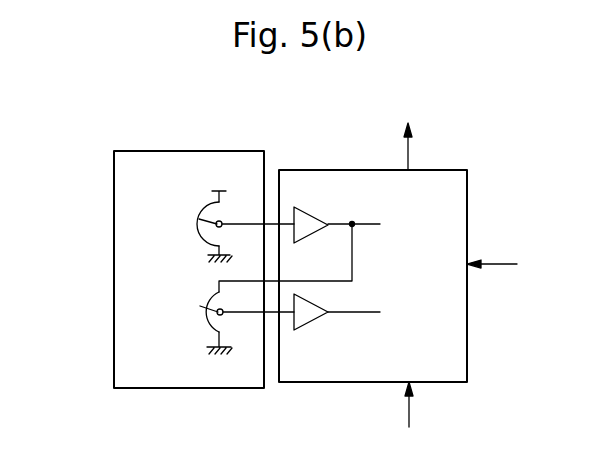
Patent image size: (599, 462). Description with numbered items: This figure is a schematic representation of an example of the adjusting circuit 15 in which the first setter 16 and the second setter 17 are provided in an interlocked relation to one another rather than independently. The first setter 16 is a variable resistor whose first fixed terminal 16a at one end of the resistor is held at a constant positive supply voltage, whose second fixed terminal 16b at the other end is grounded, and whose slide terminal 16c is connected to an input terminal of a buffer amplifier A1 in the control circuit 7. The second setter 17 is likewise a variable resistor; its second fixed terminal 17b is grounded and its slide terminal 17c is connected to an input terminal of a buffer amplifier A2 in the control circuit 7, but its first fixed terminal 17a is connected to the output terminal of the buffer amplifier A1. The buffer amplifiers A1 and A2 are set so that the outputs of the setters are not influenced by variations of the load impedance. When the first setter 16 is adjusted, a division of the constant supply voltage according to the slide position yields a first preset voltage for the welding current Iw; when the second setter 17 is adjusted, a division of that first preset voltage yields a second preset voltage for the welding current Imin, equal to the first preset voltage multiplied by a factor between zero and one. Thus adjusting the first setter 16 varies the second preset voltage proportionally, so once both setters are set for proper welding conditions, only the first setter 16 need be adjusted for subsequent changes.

The adjusting circuit 15 is at (170, 161).
The first setter 16 is at (180, 188).
The first fixed terminal 16a is at (221, 200).
The second fixed terminal 16b is at (215, 250).
The slide terminal 16c is at (222, 227).
The second setter 17 is at (208, 292).
The first fixed terminal 17a is at (219, 282).
The second fixed terminal 17b is at (215, 336).
The slide terminal 17c is at (223, 315).
The control circuit 7 is at (398, 275).
The buffer amplifier A1 is at (306, 222).
The buffer amplifier A2 is at (306, 318).